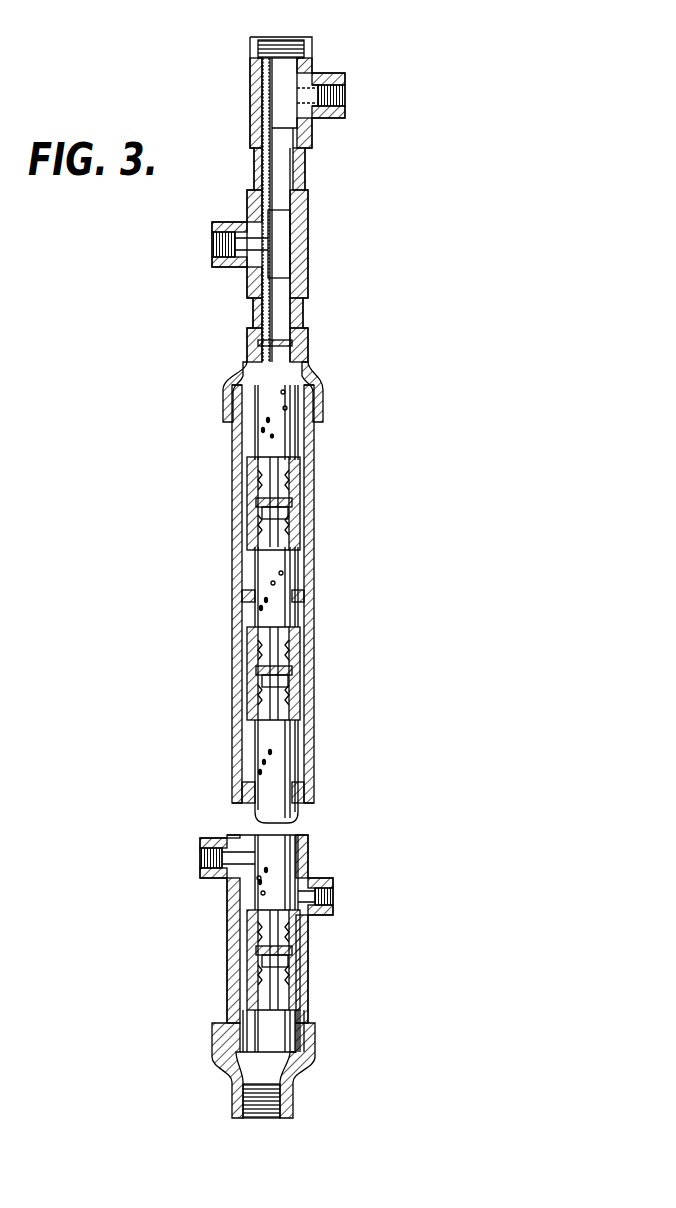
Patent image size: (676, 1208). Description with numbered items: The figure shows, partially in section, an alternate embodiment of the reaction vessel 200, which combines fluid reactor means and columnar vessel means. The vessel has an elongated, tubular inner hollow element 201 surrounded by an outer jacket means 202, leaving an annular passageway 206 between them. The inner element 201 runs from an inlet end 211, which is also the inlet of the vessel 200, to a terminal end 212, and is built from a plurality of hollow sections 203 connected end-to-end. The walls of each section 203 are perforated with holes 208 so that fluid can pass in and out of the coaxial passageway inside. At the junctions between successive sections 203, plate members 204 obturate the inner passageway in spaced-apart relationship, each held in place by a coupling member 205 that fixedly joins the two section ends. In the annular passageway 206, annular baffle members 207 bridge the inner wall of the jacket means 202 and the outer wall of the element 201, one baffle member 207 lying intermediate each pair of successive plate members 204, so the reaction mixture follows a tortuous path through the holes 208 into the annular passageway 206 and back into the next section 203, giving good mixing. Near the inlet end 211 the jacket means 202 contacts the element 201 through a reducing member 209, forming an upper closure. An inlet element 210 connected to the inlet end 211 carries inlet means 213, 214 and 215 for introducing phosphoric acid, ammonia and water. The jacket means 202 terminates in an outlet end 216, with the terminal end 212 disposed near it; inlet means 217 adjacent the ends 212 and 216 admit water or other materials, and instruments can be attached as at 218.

The reaction vessel 200 is at (322, 430).
The inner hollow element 201 is at (256, 403).
The outer jacket means 202 is at (315, 549).
The hollow sections 203 is at (260, 417).
The plate members 204 is at (293, 500).
The coupling member 205 is at (280, 508).
The annular passageway 206 is at (300, 518).
The annular baffle members 207 is at (303, 597).
The holes 208 is at (297, 399).
The reducing member 209 is at (313, 371).
The inlet element 210 is at (240, 129).
The inlet end 211 is at (276, 343).
The terminal end 212 is at (268, 1002).
The inlet means 213 is at (292, 38).
The inlet means 214 is at (347, 96).
The inlet means 215 is at (213, 242).
The outlet end 216 is at (262, 1122).
The inlet means 217 is at (334, 893).
The means for attaching instruments 218 is at (200, 860).